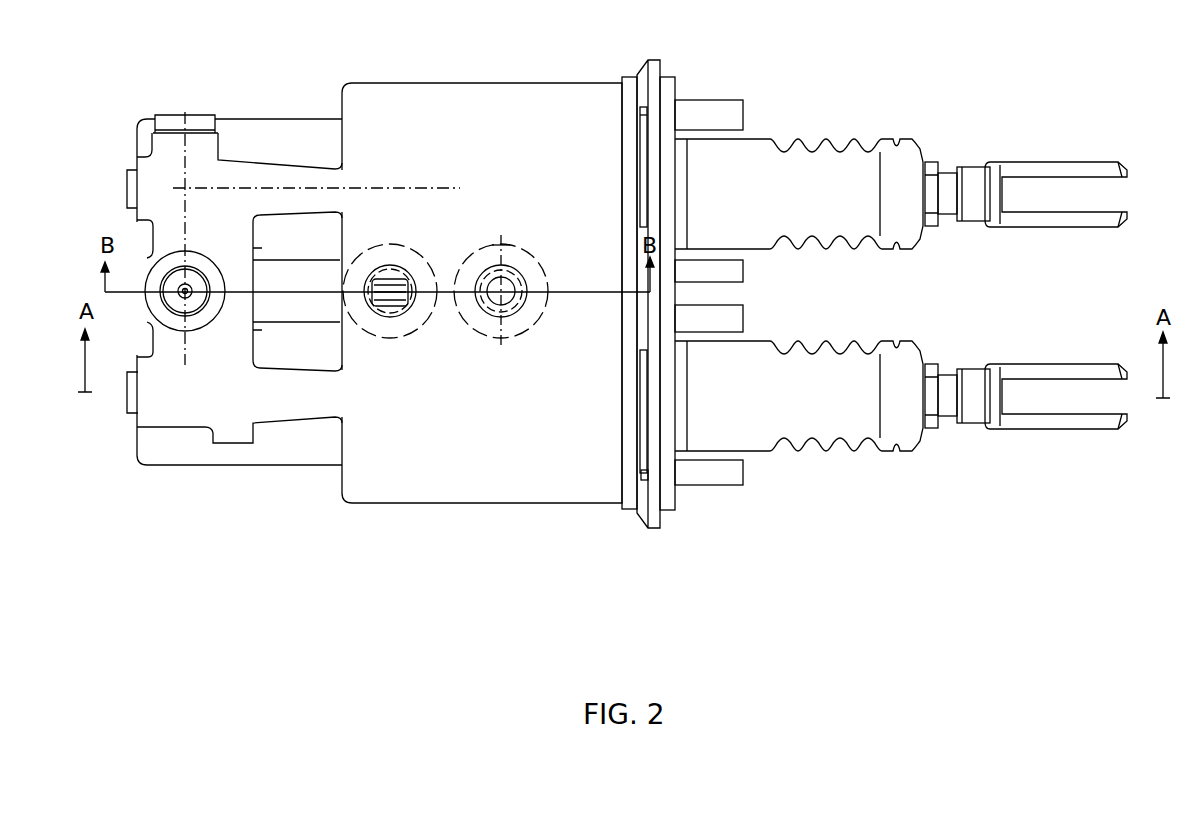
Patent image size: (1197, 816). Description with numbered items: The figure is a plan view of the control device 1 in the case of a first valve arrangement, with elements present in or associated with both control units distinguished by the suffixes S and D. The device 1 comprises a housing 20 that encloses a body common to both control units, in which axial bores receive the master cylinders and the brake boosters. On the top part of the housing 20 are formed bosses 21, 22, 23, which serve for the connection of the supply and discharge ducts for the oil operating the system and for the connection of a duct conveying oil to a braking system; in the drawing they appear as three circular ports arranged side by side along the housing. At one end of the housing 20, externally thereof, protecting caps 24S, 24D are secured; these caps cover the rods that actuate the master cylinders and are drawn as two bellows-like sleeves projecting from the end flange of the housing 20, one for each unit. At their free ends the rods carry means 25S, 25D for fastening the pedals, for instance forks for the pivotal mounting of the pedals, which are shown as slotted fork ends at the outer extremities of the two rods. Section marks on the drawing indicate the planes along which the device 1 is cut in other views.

The device 1 is at (268, 119).
The housing 20 is at (490, 103).
The boss 21 is at (510, 327).
The boss 22 is at (403, 322).
The boss 23 is at (178, 322).
The protecting cap 24D is at (800, 147).
The protecting cap 24S is at (800, 435).
The means for fastening pedals 25D is at (1032, 167).
The means for fastening pedals 25S is at (1013, 370).